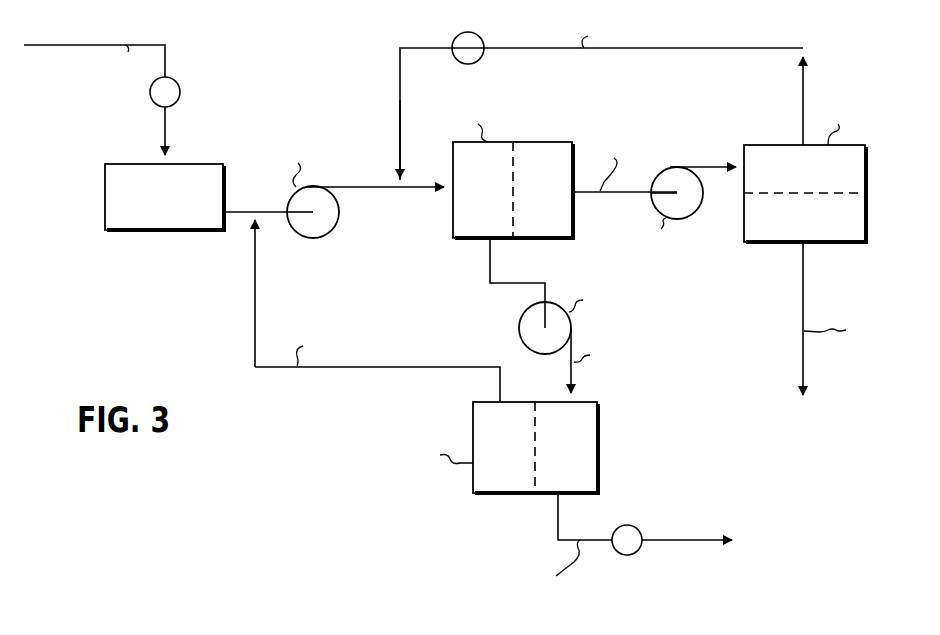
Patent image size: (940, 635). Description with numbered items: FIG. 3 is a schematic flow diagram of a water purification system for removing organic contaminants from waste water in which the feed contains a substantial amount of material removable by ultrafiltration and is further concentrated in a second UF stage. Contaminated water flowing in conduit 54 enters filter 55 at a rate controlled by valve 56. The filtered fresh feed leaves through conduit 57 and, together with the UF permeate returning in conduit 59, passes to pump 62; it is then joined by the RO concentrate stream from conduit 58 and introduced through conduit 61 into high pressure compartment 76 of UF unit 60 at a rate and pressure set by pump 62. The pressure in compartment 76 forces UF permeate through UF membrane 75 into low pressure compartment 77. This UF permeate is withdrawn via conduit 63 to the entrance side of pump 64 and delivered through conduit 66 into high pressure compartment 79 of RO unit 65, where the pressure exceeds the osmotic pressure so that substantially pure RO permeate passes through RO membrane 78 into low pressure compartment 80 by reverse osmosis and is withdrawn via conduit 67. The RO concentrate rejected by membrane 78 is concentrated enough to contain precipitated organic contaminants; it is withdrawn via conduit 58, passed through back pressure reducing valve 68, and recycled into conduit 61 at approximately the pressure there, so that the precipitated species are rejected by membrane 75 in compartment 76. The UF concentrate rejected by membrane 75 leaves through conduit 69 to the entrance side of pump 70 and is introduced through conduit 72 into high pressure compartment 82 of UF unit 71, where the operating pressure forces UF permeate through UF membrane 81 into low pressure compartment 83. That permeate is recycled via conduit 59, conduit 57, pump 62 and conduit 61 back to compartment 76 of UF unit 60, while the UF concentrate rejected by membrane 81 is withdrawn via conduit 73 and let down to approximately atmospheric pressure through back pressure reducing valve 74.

The conduit 54 is at (166, 63).
The filter 55 is at (118, 192).
The valve 56 is at (176, 101).
The conduit 57 is at (236, 211).
The conduit 58 is at (398, 84).
The conduit 59 is at (255, 290).
The UF unit 60 is at (534, 175).
The conduit 61 is at (366, 186).
The pump 62 is at (333, 222).
The conduit 63 is at (622, 194).
The pump 64 is at (690, 204).
The RO unit 65 is at (828, 172).
The conduit 66 is at (711, 166).
The conduit 67 is at (803, 293).
The back pressure reducing valve 68 is at (459, 38).
The conduit 69 is at (489, 258).
The pump 70 is at (521, 330).
The UF unit 71 is at (504, 447).
The conduit 72 is at (570, 373).
The conduit 73 is at (557, 523).
The back pressure reducing valve 74 is at (640, 528).
The UF membrane 75 is at (515, 216).
The high pressure compartment 76 is at (469, 187).
The low pressure compartment 77 is at (529, 187).
The RO membrane 78 is at (786, 193).
The high pressure compartment 79 is at (826, 182).
The low pressure compartment 80 is at (789, 227).
The UF membrane 81 is at (538, 470).
The high pressure compartment 82 is at (551, 446).
The low pressure compartment 83 is at (490, 446).